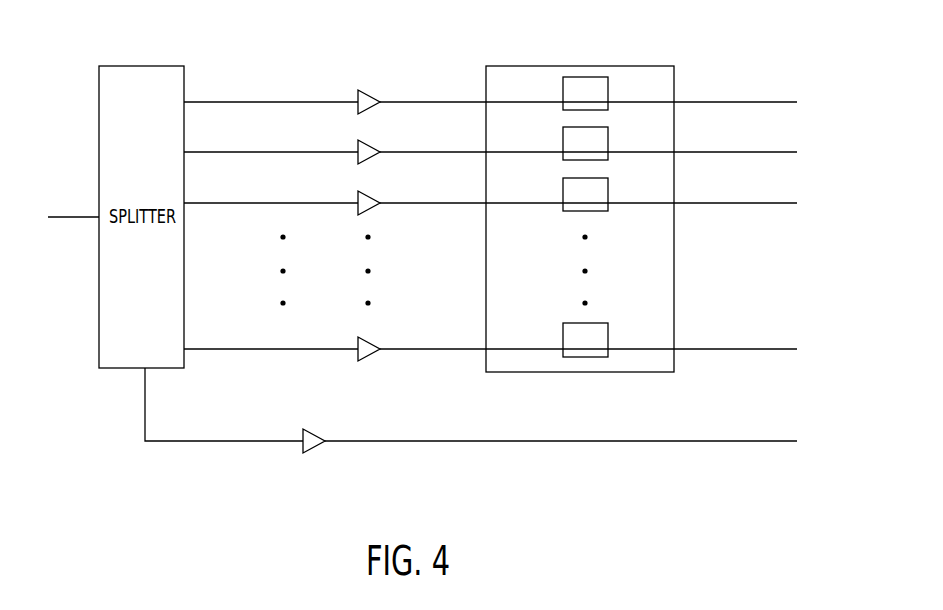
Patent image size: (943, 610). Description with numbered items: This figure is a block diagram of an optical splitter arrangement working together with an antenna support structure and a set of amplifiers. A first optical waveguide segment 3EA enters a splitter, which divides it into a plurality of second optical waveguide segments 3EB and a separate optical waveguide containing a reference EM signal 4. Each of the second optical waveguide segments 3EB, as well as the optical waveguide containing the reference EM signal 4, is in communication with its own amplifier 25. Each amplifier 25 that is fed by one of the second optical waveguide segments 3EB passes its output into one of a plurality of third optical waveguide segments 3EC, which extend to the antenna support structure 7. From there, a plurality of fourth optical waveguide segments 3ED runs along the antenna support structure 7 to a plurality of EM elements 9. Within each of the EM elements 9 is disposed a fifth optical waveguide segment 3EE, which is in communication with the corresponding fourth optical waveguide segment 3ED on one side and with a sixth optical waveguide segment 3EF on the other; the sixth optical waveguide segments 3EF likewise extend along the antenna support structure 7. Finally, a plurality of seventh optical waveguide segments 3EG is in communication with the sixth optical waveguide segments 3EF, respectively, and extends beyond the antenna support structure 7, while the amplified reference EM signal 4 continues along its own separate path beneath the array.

The first optical waveguide segment 3EA is at (73, 214).
The second optical waveguide segments 3EB is at (271, 214).
The third optical waveguide segments 3EC is at (433, 214).
The fourth optical waveguide segments 3ED is at (524, 214).
The fifth optical waveguide segments 3EE is at (585, 214).
The sixth optical waveguide segments 3EF is at (641, 214).
The seventh optical waveguide segments 3EG is at (735, 214).
The amplifier 25 is at (358, 200).
The EM elements 9 is at (608, 195).
The antenna support structure 7 is at (523, 363).
The optical waveguide containing a reference EM signal 4 is at (237, 441).